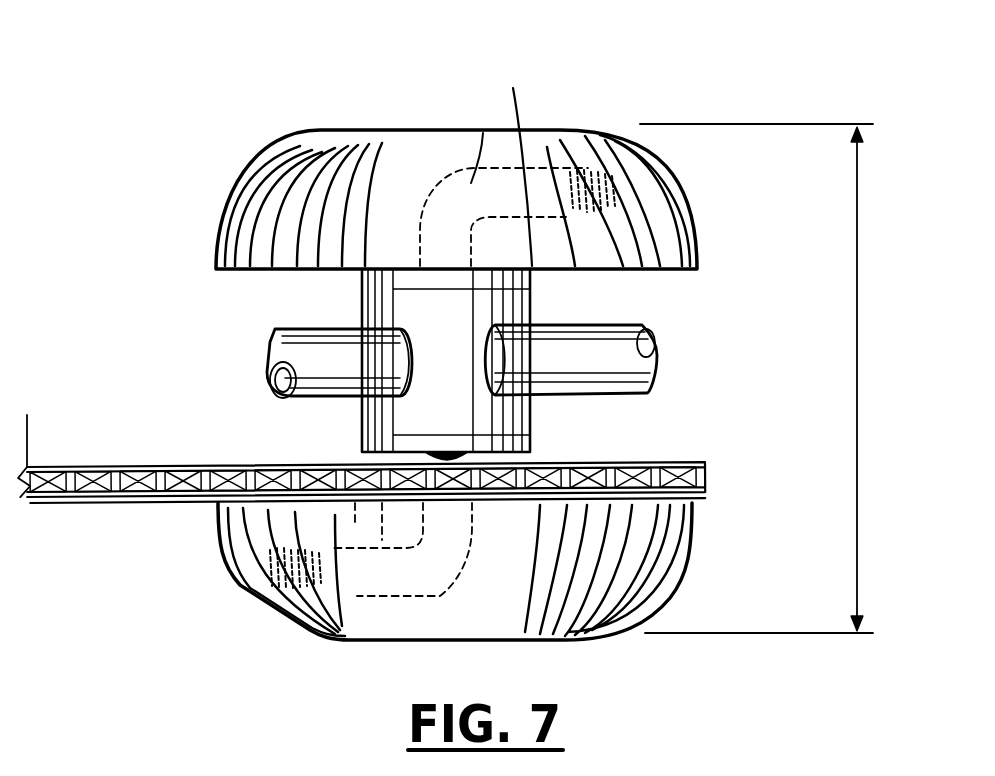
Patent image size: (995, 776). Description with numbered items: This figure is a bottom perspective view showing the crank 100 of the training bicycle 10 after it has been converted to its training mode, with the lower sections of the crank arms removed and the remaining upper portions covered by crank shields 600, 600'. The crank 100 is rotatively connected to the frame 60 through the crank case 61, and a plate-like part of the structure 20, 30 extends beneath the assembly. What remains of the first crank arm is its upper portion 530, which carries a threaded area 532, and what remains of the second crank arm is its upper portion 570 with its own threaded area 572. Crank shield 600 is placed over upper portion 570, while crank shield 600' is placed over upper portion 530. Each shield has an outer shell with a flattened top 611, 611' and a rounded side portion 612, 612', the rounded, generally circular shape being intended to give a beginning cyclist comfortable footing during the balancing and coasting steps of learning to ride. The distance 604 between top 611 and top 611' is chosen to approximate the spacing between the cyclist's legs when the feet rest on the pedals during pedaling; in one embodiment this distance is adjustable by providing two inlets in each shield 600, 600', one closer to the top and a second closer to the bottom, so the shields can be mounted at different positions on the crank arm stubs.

The training bicycle 10 is at (377, 421).
The plate right portion 20 is at (648, 475).
The plate 30 is at (67, 470).
The frame 60 is at (312, 353).
The crank case 61 is at (514, 312).
The crank 100 is at (438, 258).
The upper portion of first crank arm 530 is at (483, 133).
The threaded area of upper portion of first crank arm 532 is at (550, 155).
The upper portion of second crank arm 570 is at (375, 580).
The threaded area of upper portion of second crank arm 572 is at (268, 598).
The crank shield 600 is at (456, 161).
The crank shield 600' is at (386, 571).
The distance between tops 604 is at (857, 207).
The top 611 is at (618, 154).
The top 611' is at (573, 597).
The rounded side portion 612 is at (282, 167).
The rounded side portion 612' is at (231, 585).